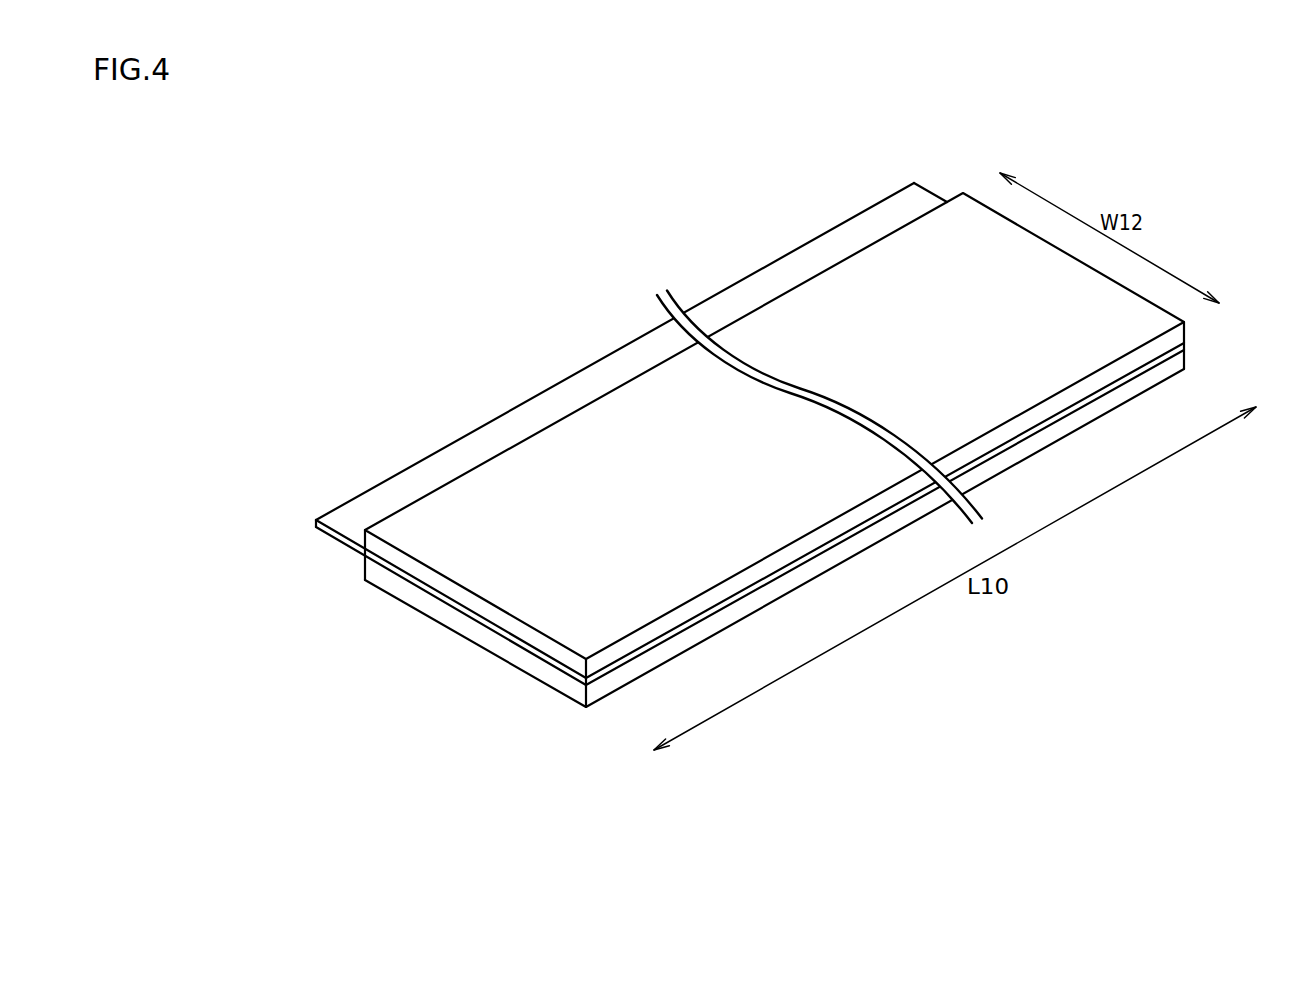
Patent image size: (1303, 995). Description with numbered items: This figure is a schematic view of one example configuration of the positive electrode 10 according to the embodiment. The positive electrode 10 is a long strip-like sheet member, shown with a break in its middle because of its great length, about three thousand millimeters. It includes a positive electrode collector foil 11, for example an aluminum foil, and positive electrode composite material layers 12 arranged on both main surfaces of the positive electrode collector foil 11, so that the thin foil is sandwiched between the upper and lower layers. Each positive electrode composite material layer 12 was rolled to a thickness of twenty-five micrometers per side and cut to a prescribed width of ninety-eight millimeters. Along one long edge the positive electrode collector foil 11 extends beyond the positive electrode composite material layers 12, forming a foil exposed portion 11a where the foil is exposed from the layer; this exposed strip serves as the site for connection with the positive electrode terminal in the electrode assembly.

The positive electrode 10 is at (689, 426).
The positive electrode collector foil 11 is at (579, 415).
The foil exposed portion 11a is at (795, 273).
The positive electrode composite material layer 12 is at (445, 584).